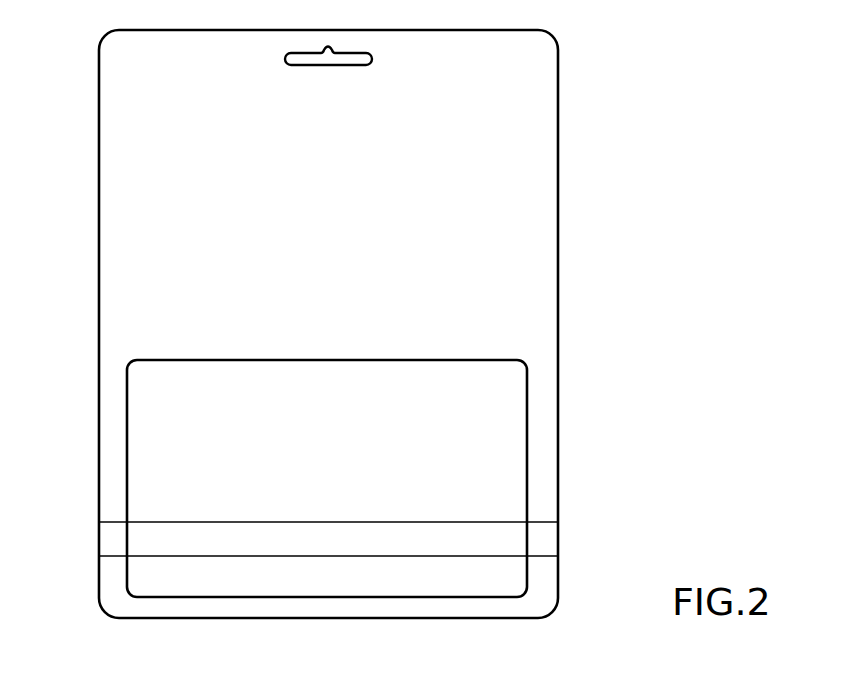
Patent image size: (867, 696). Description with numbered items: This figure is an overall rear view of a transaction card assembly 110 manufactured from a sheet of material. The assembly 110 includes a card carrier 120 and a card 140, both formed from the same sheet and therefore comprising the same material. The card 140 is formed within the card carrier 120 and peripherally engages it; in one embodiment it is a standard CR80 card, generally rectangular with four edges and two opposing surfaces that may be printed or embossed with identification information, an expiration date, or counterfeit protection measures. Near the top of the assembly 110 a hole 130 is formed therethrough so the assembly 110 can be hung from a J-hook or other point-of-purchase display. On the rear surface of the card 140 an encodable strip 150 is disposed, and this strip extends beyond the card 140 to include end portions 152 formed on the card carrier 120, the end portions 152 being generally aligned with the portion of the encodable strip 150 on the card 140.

The transaction card assembly 110 is at (379, 309).
The card carrier 120 is at (545, 323).
The hole 130 is at (352, 58).
The card 140 is at (337, 452).
The encodable strip 150 is at (328, 488).
The end portions 152 is at (108, 533).